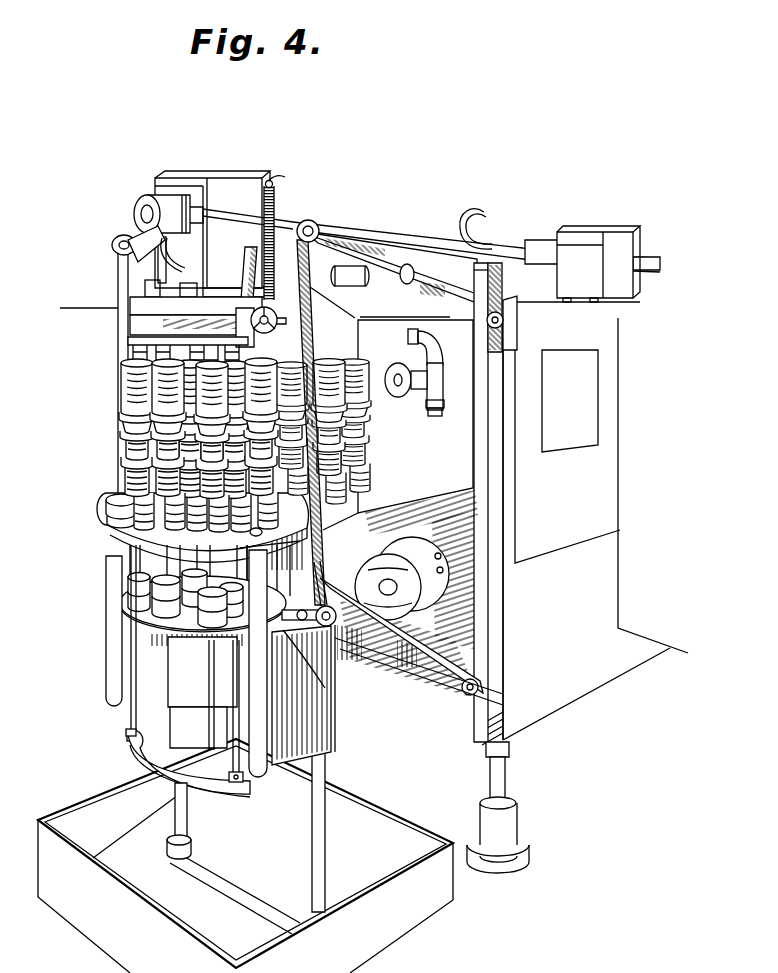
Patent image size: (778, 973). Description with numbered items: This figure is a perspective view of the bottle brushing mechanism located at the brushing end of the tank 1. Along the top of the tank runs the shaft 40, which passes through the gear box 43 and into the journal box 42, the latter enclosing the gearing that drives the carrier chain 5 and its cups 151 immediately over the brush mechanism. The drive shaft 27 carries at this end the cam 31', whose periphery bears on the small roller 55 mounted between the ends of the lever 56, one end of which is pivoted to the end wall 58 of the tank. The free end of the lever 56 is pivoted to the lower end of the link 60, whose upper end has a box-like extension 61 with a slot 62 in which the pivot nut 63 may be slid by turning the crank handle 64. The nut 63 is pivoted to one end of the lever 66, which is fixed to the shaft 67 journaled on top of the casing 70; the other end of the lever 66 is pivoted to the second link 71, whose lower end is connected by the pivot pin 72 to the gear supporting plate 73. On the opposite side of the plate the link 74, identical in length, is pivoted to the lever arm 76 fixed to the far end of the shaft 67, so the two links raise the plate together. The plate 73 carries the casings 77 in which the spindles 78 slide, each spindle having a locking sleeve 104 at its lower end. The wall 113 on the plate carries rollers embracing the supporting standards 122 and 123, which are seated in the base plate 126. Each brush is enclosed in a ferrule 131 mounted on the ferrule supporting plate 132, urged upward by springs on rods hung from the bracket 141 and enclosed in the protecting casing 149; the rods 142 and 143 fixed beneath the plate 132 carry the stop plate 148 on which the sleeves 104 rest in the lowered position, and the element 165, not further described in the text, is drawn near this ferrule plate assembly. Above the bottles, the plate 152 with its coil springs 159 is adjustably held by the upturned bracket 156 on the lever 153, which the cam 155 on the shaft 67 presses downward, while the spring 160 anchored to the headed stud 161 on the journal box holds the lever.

The tank 1 is at (578, 693).
The carrier chain 5 is at (245, 542).
The drive shaft 27 is at (380, 588).
The cam 31' is at (335, 583).
The shaft 40 is at (411, 236).
The journal box 42 is at (237, 193).
The gear box 43 is at (620, 219).
The small roller 55 is at (425, 632).
The lever 56 is at (386, 657).
The end wall 58 is at (413, 706).
The link 60 is at (483, 466).
The box-like extension 61 is at (503, 281).
The slot 62 is at (510, 316).
The pivot nut 63 is at (488, 326).
The crank handle 64 is at (480, 207).
The lever 66 is at (470, 281).
The shaft 67 is at (411, 272).
The casing 70 is at (378, 500).
The second link 71 is at (297, 229).
The pivot pin 72 is at (322, 625).
The gear supporting plate 73 is at (326, 690).
The link 74 is at (119, 278).
The lever arm 76 is at (148, 242).
The casings 77 is at (150, 575).
The spindle 78 is at (211, 689).
The locking sleeve 104 is at (212, 706).
The wall 113 is at (337, 728).
The supporting standard 122 is at (326, 879).
The supporting standard 123 is at (190, 836).
The base plate 126 is at (225, 897).
The ferrule 131 is at (112, 538).
The ferrule supporting plate 132 is at (107, 528).
The bracket 141 is at (290, 549).
The rod 142 is at (129, 724).
The rod 143 is at (236, 785).
The plate 148 is at (132, 765).
The protecting casing 149 is at (104, 619).
The cups 151 is at (133, 483).
The plate 152 is at (133, 332).
The lever 153 is at (272, 333).
The cam 155 is at (367, 322).
The upturned bracket 156 is at (246, 268).
The coil springs 159 is at (126, 365).
The spring 160 is at (277, 201).
The headed stud 161 is at (283, 170).
The platform 165 is at (122, 510).